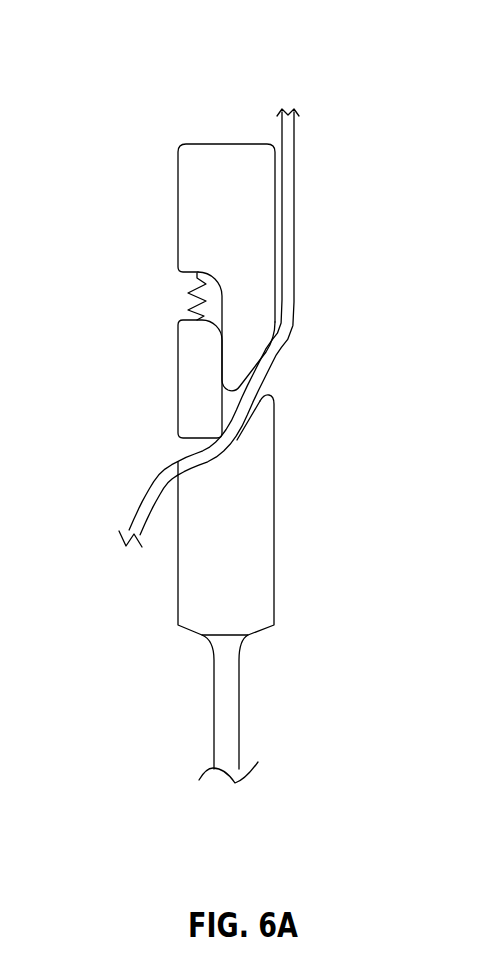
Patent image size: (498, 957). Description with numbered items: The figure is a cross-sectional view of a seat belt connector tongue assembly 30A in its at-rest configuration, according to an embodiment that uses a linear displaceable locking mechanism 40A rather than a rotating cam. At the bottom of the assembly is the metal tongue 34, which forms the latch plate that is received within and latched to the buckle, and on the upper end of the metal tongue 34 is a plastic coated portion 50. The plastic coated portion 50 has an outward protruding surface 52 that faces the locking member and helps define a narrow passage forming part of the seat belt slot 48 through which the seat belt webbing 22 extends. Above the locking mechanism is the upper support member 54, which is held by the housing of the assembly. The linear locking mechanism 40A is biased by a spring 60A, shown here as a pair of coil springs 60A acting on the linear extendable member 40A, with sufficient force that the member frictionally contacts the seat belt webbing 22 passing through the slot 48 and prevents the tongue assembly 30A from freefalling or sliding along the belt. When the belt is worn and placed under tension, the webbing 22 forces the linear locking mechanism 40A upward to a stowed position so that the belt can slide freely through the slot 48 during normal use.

The seat belt connector tongue assembly 30A is at (182, 82).
The seat belt webbing 22 is at (295, 147).
The upper support member 54 is at (200, 143).
The seat belt slot 48 is at (278, 387).
The spring 60A is at (191, 293).
The linear displaceable locking mechanism 40A is at (192, 386).
The outward protruding surface 52 is at (223, 447).
The plastic coated portion 50 is at (270, 517).
The metal tongue 34 is at (212, 698).